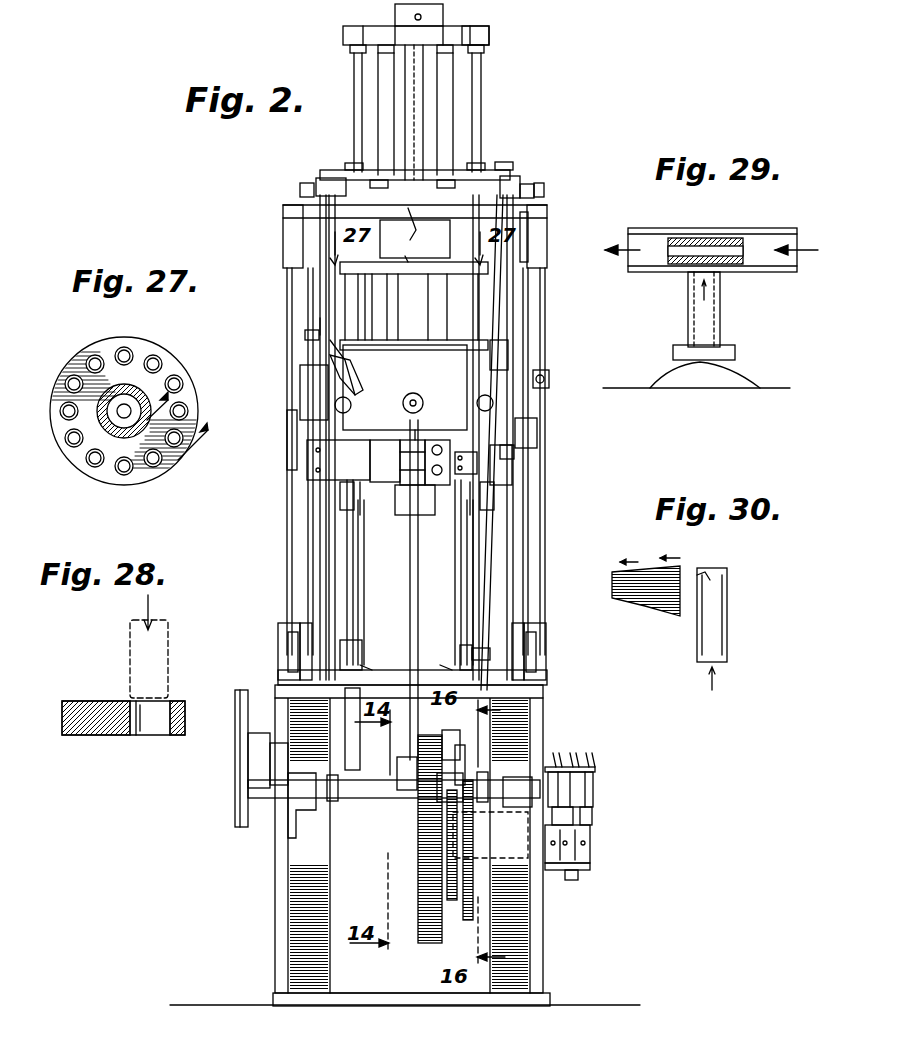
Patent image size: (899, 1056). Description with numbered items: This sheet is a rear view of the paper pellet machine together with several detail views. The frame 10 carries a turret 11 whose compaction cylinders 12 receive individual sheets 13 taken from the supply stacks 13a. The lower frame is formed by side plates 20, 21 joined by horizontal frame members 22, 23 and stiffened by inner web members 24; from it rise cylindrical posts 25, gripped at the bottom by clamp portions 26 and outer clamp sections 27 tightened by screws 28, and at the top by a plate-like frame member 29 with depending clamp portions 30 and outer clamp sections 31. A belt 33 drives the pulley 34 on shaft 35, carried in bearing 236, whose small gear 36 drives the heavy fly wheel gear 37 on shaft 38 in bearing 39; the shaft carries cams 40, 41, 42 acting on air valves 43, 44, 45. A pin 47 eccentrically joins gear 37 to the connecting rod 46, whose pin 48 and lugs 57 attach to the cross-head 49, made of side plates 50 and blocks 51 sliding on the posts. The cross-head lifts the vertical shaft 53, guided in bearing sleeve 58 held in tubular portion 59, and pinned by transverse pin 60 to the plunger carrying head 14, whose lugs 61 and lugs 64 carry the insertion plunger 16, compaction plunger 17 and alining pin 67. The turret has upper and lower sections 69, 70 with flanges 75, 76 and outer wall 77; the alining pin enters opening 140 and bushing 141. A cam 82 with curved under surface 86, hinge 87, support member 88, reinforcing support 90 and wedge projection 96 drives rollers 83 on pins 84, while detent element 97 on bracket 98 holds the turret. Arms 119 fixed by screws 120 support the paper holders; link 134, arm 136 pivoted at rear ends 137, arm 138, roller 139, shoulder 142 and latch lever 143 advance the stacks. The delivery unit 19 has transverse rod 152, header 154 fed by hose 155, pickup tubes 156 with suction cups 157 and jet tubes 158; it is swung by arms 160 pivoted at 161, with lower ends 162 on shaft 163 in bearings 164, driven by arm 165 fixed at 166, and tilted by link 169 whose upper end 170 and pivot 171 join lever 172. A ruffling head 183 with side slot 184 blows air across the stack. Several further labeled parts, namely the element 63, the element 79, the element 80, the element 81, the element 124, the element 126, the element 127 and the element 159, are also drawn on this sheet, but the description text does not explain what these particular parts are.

In FIG. 2, the frame 10 is at (548, 705).
In FIG. 2, the turret 11 is at (405, 387).
In FIG. 2, the compaction cylinders 12 is at (340, 305).
In FIG. 27, the compaction cylinders 12 is at (118, 348).
In FIG. 29, the sheets of paper 13 is at (640, 386).
In FIG. 30, the sheets of paper 13 is at (618, 568).
In FIG. 30, the supply stacks 13a is at (650, 600).
In FIG. 2, the plunger carrying head 14 is at (490, 38).
In FIG. 2, the insertion plunger 16 is at (380, 130).
In FIG. 2, the compaction plunger 17 is at (356, 68).
In FIG. 2, the paper delivery unit 19 is at (314, 183).
In FIG. 2, the side plate 20 is at (276, 876).
In FIG. 2, the side plate 21 is at (545, 910).
In FIG. 2, the horizontal frame member 22 is at (385, 670).
In FIG. 2, the horizontal frame member 23 is at (385, 992).
In FIG. 2, the inner web members 24 is at (318, 856).
In FIG. 2, the cylindrical posts 25 is at (285, 515).
In FIG. 2, the clamp portions 26 is at (308, 623).
In FIG. 2, the outer clamp sections 27 is at (278, 620).
In FIG. 2, the screws 28 is at (288, 640).
In FIG. 27, the screws 28 is at (170, 437).
In FIG. 2, the horizontal plate-like frame member 29 is at (530, 185).
In FIG. 2, the depending clamp portions 30 is at (533, 225).
In FIG. 2, the outer clamp sections 31 is at (548, 240).
In FIG. 2, the belt 33 is at (235, 812).
In FIG. 2, the pulley 34 is at (235, 790).
In FIG. 2, the shaft 35 is at (383, 750).
In FIG. 2, the gear 36 is at (458, 740).
In FIG. 2, the gear 37 is at (432, 945).
In FIG. 2, the shaft 38 is at (420, 868).
In FIG. 2, the bearing 39 is at (490, 835).
In FIG. 2, the cam 40 is at (562, 872).
In FIG. 2, the cam 41 is at (585, 870).
In FIG. 2, the cam 42 is at (592, 820).
In FIG. 2, the air valve 43 is at (557, 753).
In FIG. 2, the air valve 44 is at (574, 753).
In FIG. 2, the air valve 45 is at (591, 753).
In FIG. 2, the connecting rod 46 is at (418, 583).
In FIG. 2, the pin 47 is at (378, 782).
In FIG. 2, the pin 48 is at (432, 515).
In FIG. 2, the cross-head 49 is at (515, 470).
In FIG. 2, the side plates 50 is at (520, 478).
In FIG. 2, the blocks 51 is at (340, 470).
In FIG. 2, the vertical shaft 53 is at (425, 105).
In FIG. 27, the vertical shaft 53 is at (100, 418).
In FIG. 2, the lugs 57 is at (425, 485).
In FIG. 2, the tubular bearing sleeve 58 is at (405, 272).
In FIG. 27, the tubular bearing sleeve 58 is at (108, 408).
In FIG. 2, the tubular portion 59 is at (418, 265).
In FIG. 2, the transverse pin 60 is at (414, 16).
In FIG. 2, the lugs 61 is at (343, 30).
In FIG. 2, the collar 63 is at (353, 170).
In FIG. 2, the lugs 64 is at (470, 28).
In FIG. 2, the alining pin 67 is at (430, 130).
In FIG. 28, the alining pin 67 is at (170, 642).
In FIG. 2, the upper turret section 69 is at (435, 315).
In FIG. 2, the lower turret section 70 is at (470, 360).
In FIG. 2, the upper flange 75 is at (490, 266).
In FIG. 27, the upper flange 75 is at (180, 362).
In FIG. 28, the upper flange 75 is at (95, 700).
In FIG. 2, the lower flange 76 is at (490, 345).
In FIG. 2, the cylindrical outer wall 77 is at (345, 432).
In FIG. 2, the pin 79 is at (418, 430).
In FIG. 2, the lever 80 is at (390, 440).
In FIG. 2, the block 81 is at (405, 475).
In FIG. 2, the cam 82 is at (365, 397).
In FIG. 2, the rollers 83 is at (335, 403).
In FIG. 2, the pin 84 is at (416, 403).
In FIG. 2, the curved under surface 86 is at (360, 380).
In FIG. 2, the hinge 87 is at (320, 323).
In FIG. 2, the support member 88 is at (305, 338).
In FIG. 2, the reinforcing support 90 is at (300, 368).
In FIG. 2, the wedge projection 96 is at (333, 347).
In FIG. 2, the detent element 97 is at (545, 388).
In FIG. 2, the mounting bracket 98 is at (552, 373).
In FIG. 2, the arms 119 is at (285, 424).
In FIG. 2, the screws 120 is at (285, 420).
In FIG. 2, the rod 124 is at (458, 550).
In FIG. 2, the rod 126 is at (362, 510).
In FIG. 2, the block 127 is at (338, 495).
In FIG. 2, the link 134 is at (360, 600).
In FIG. 2, the arm 136 is at (358, 640).
In FIG. 2, the rear ends 137 is at (470, 650).
In FIG. 2, the upwardly projecting arm 138 is at (466, 600).
In FIG. 2, the roller 139 is at (520, 455).
In FIG. 28, the opening 140 is at (166, 728).
In FIG. 27, the bushing 141 is at (70, 378).
In FIG. 28, the bushing 141 is at (172, 702).
In FIG. 2, the shoulder 142 is at (530, 430).
In FIG. 2, the latch lever 143 is at (535, 418).
In FIG. 2, the transverse rod 152 is at (507, 168).
In FIG. 29, the transverse rod 152 is at (770, 232).
In FIG. 2, the tubular header 154 is at (430, 176).
In FIG. 2, the hose 155 is at (415, 233).
In FIG. 29, the pickup tube 156 is at (722, 310).
In FIG. 29, the suction cup element 157 is at (745, 382).
In FIG. 29, the jet tube 158 is at (705, 240).
In FIG. 29, the tube end 159 is at (632, 270).
In FIG. 2, the arms 160 is at (327, 545).
In FIG. 2, the pivotal connection 161 is at (300, 190).
In FIG. 2, the lower ends 162 is at (355, 800).
In FIG. 2, the transverse shaft 163 is at (359, 834).
In FIG. 2, the bearings 164 is at (298, 790).
In FIG. 2, the arm 165 is at (470, 752).
In FIG. 2, the connection 166 is at (430, 790).
In FIG. 2, the link 169 is at (492, 560).
In FIG. 2, the upper end 170 is at (515, 178).
In FIG. 2, the pivotal connection 171 is at (490, 808).
In FIG. 2, the double ended lever 172 is at (455, 808).
In FIG. 30, the paper ruffling head 183 is at (728, 588).
In FIG. 30, the side slot 184 is at (700, 572).
In FIG. 2, the bearing 236 is at (258, 735).